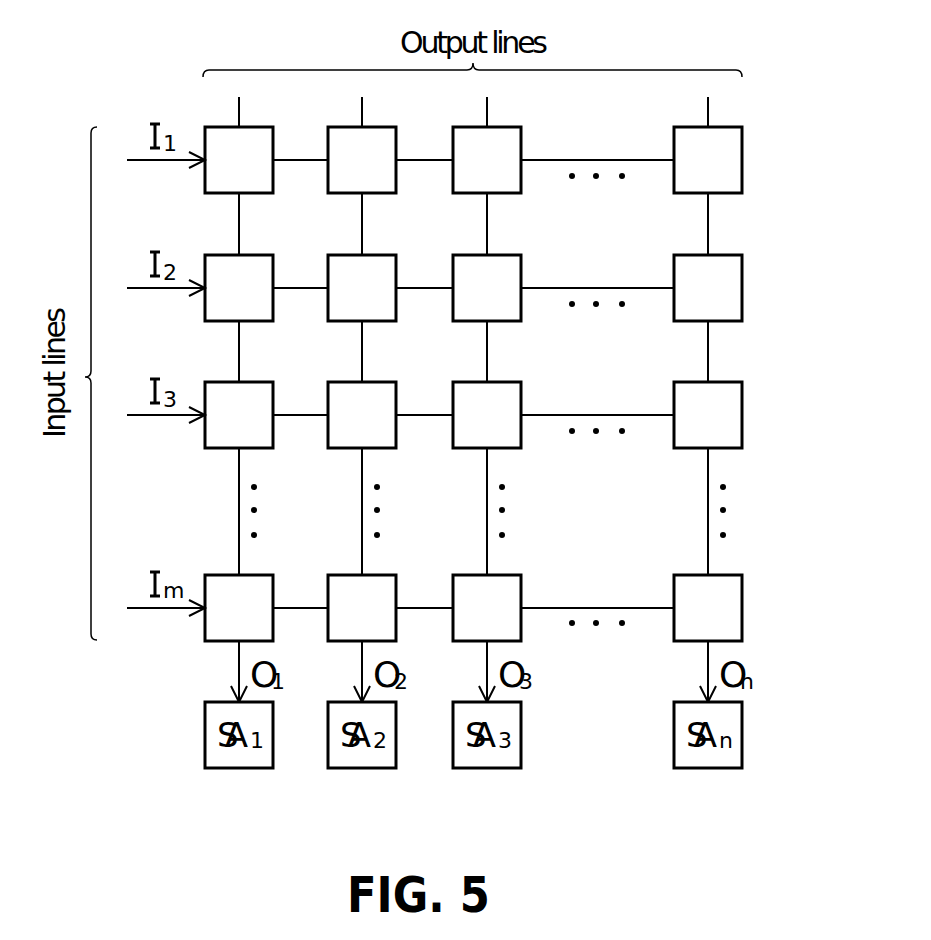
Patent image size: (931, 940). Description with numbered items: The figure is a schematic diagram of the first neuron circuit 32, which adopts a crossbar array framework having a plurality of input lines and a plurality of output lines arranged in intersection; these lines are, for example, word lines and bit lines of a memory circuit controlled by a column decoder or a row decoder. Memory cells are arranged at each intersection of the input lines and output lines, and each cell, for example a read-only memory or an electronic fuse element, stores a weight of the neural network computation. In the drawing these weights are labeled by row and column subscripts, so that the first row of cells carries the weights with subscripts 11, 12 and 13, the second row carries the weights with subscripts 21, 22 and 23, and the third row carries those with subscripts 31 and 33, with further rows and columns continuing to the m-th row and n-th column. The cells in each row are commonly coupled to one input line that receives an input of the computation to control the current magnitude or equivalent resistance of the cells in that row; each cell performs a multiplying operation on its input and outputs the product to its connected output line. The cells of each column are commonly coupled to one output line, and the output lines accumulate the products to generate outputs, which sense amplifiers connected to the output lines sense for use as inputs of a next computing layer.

The first neuron circuit 32 is at (479, 399).
The memory cell R11 11 is at (239, 160).
The memory cell R12 12 is at (362, 160).
The memory cell R13 13 is at (487, 160).
The memory cell R21 21 is at (239, 288).
The memory cell R22 22 is at (362, 288).
The memory cell R23 23 is at (487, 288).
The memory cell R31 31 is at (239, 415).
The memory cell R33 33 is at (487, 415).